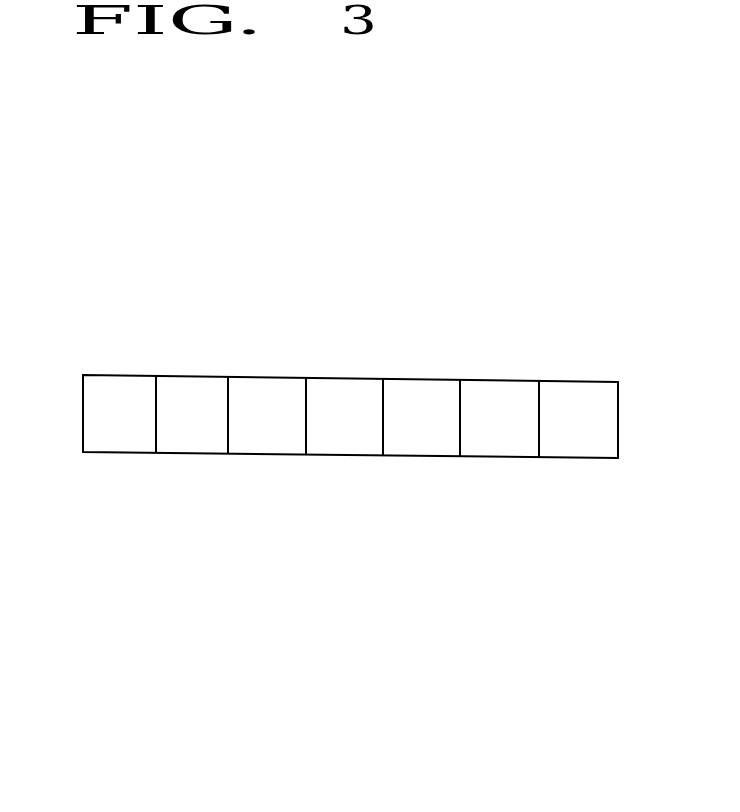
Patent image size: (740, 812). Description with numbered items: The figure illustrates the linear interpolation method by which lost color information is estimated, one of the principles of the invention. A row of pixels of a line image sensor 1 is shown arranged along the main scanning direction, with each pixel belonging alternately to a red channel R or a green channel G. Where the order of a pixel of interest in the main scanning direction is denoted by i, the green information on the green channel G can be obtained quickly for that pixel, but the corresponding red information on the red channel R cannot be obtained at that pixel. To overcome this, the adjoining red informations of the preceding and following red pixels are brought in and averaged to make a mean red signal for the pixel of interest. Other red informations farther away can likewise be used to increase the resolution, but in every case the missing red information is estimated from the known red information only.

The line image sensor 1 is at (337, 470).
The red channel R is at (336, 393).
The green channel G is at (344, 393).